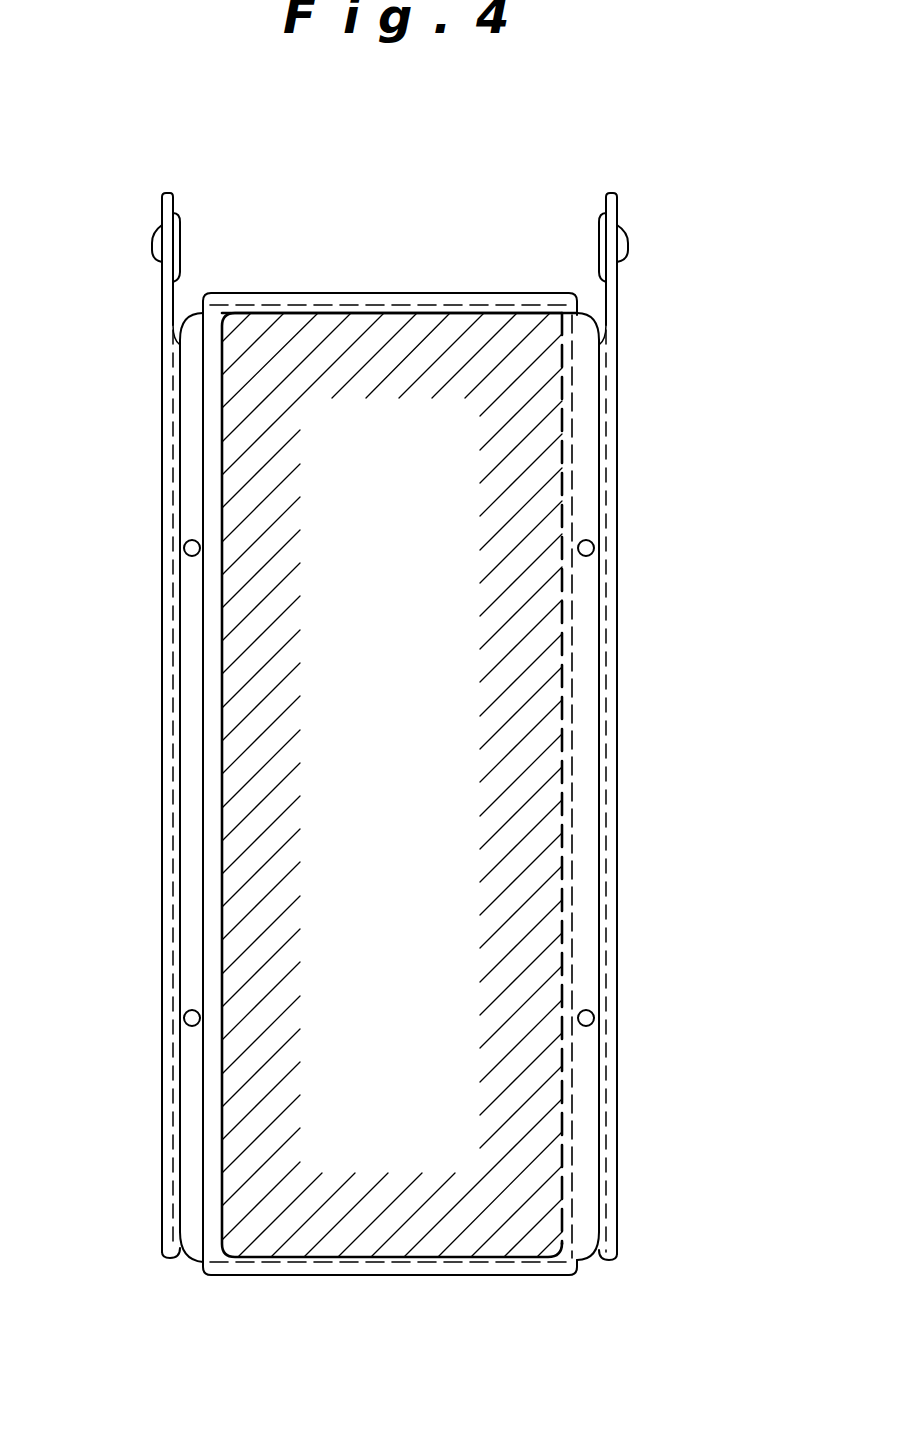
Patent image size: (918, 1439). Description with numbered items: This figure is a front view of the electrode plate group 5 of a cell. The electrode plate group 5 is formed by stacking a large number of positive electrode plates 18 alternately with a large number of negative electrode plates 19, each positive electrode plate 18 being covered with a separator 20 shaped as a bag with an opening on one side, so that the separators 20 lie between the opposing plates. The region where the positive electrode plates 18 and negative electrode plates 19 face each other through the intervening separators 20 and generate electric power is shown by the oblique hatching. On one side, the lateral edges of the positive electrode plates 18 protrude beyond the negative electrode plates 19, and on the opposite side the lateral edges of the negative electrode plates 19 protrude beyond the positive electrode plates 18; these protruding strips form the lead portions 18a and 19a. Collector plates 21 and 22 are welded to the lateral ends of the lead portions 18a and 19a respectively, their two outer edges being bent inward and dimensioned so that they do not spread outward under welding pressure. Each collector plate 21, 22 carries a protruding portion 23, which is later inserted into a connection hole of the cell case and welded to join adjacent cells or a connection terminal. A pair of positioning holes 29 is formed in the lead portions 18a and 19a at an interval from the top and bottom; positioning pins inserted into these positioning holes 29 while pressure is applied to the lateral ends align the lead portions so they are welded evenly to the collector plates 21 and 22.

The electrode plate group 5 is at (648, 296).
The positive electrode plate 18 is at (336, 306).
The lead portion 18a is at (192, 775).
The negative electrode plate 19 is at (463, 311).
The lead portion 19a is at (590, 775).
The separator 20 is at (218, 683).
The collector plate 21 is at (161, 940).
The collector plate 22 is at (612, 925).
The protruding portion 23 is at (152, 248).
The positioning hole 29 is at (184, 548).